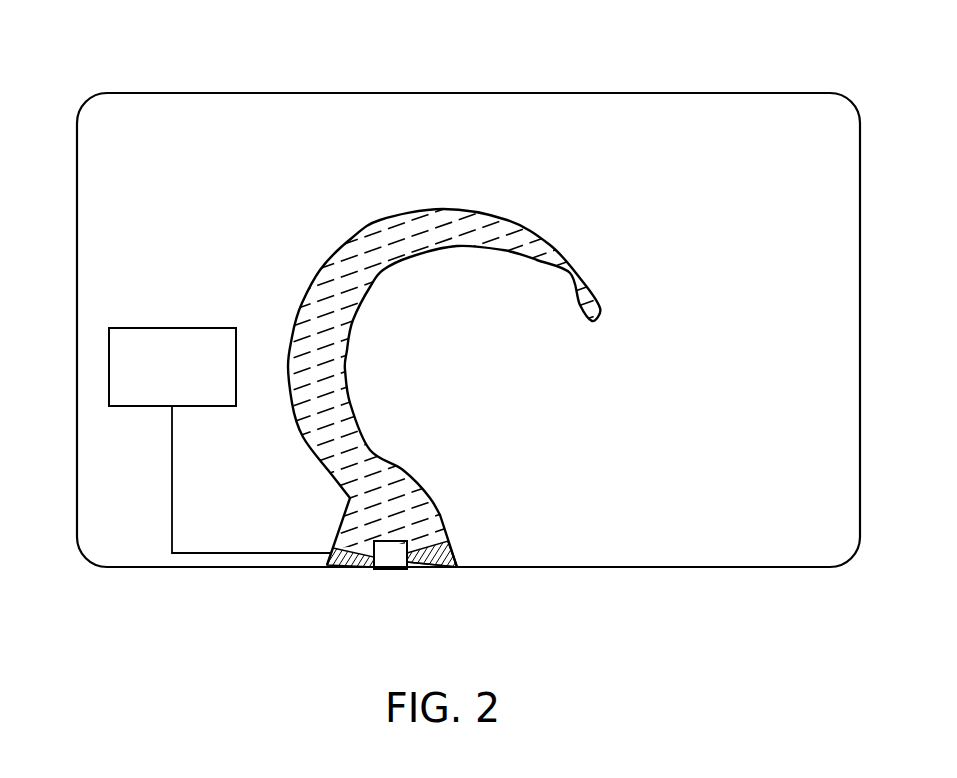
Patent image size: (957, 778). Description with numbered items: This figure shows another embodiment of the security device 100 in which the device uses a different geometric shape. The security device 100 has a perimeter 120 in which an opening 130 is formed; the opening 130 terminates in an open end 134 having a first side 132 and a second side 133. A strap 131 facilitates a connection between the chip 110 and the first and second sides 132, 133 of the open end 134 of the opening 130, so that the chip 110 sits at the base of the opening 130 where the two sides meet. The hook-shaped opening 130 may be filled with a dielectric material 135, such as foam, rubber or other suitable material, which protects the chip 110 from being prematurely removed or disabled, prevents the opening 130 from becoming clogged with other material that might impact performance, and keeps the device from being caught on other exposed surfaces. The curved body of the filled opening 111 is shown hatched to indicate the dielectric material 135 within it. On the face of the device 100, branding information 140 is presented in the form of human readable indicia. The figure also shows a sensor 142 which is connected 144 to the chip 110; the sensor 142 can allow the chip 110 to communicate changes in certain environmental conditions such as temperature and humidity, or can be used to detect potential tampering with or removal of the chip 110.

The security device 100 is at (506, 360).
The perimeter 120 is at (860, 336).
The branding information 140 is at (172, 93).
The sensor 142 is at (172, 328).
The connection 144 is at (172, 517).
The hook member 111 is at (585, 279).
The dielectric material 135 is at (413, 222).
The opening 130 is at (402, 565).
The first side 132 is at (330, 551).
The right base portion 133 is at (452, 549).
The open end 134 is at (427, 566).
The strap 131 is at (458, 569).
The chip 110 is at (391, 571).